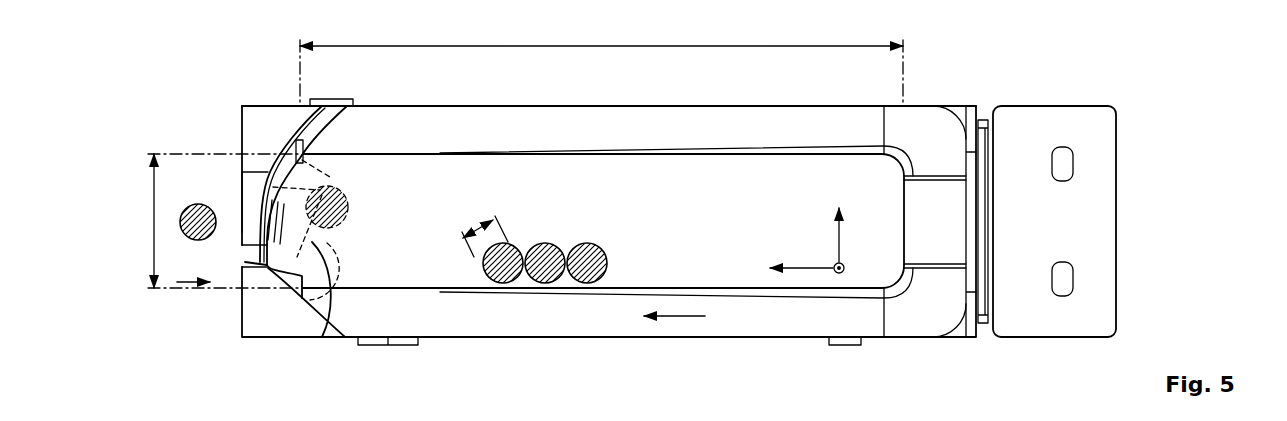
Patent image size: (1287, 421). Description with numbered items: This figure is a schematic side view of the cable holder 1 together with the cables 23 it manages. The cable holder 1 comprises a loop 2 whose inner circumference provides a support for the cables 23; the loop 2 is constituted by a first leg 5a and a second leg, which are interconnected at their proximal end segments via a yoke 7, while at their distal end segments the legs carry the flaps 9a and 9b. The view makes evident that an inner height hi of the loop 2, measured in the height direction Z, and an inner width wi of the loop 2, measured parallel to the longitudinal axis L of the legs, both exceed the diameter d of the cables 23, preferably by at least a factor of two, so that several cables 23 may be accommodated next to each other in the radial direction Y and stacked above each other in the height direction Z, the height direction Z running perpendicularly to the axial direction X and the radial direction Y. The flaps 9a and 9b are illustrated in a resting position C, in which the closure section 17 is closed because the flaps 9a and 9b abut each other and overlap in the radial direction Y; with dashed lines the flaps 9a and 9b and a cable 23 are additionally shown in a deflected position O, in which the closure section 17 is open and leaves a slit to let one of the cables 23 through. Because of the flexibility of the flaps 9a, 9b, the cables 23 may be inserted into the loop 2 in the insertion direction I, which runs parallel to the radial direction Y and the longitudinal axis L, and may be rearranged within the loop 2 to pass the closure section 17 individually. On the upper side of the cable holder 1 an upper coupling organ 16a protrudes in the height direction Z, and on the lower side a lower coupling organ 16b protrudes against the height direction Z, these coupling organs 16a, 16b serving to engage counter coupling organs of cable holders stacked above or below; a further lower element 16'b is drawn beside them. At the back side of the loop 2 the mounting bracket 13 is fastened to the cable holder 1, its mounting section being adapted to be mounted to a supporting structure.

The cable holder 1 is at (987, 72).
The loop 2 is at (432, 230).
The first leg 5a is at (706, 118).
The yoke 7 is at (922, 215).
The flap 9a is at (250, 205).
The flap 9b is at (297, 240).
The mounting bracket 13 is at (1113, 104).
The upper coupling organ 16a is at (325, 100).
The lower coupling organ 16b is at (388, 346).
The rear lower support tab 16'b is at (870, 362).
The closure section 17 is at (240, 254).
The cables 23 is at (503, 265).
The deflected position O is at (337, 180).
The resting position C is at (240, 201).
The insertion direction I is at (190, 284).
The longitudinal axis L is at (677, 317).
The diameter d is at (474, 228).
The inner width wi is at (601, 62).
The inner height hi is at (137, 221).
The axial direction X is at (851, 270).
The radial direction Y is at (788, 270).
The height direction Z is at (838, 219).